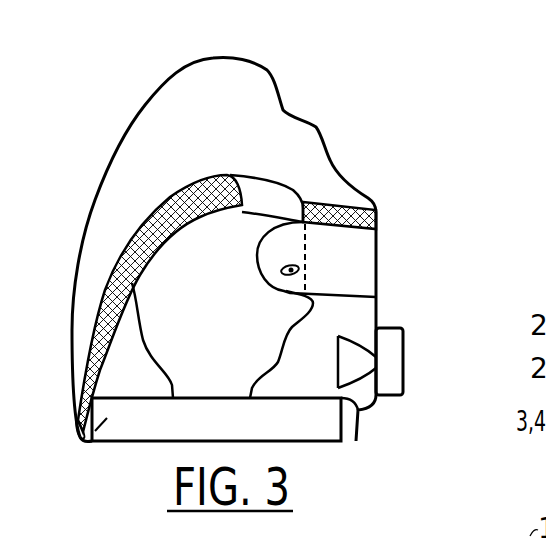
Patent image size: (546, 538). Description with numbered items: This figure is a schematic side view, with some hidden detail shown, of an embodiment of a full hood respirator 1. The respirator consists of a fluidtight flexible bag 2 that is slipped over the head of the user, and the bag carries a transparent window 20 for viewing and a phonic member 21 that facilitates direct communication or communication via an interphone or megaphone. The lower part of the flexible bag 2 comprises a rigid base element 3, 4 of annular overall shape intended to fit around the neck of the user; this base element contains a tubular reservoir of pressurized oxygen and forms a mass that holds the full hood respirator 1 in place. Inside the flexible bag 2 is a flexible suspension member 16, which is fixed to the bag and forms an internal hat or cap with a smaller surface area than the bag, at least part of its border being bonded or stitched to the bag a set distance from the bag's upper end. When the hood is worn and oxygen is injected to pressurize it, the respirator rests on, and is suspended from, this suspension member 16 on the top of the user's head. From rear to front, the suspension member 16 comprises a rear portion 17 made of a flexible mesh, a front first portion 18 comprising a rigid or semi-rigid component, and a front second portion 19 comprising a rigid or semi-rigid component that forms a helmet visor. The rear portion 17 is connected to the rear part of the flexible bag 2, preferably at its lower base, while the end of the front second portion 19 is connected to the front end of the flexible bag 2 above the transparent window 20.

The full hood respirator 1 is at (477, 218).
The fluidtight flexible bag 2 is at (88, 208).
The rigid base element 3 is at (66, 461).
The rigid base element 4 is at (83, 436).
The flexible suspension member 16 is at (188, 13).
The rear portion 17 is at (174, 196).
The front first portion 18 is at (265, 181).
The front second portion 19 is at (327, 203).
The transparent window 20 is at (346, 255).
The phonic member 21 is at (406, 331).